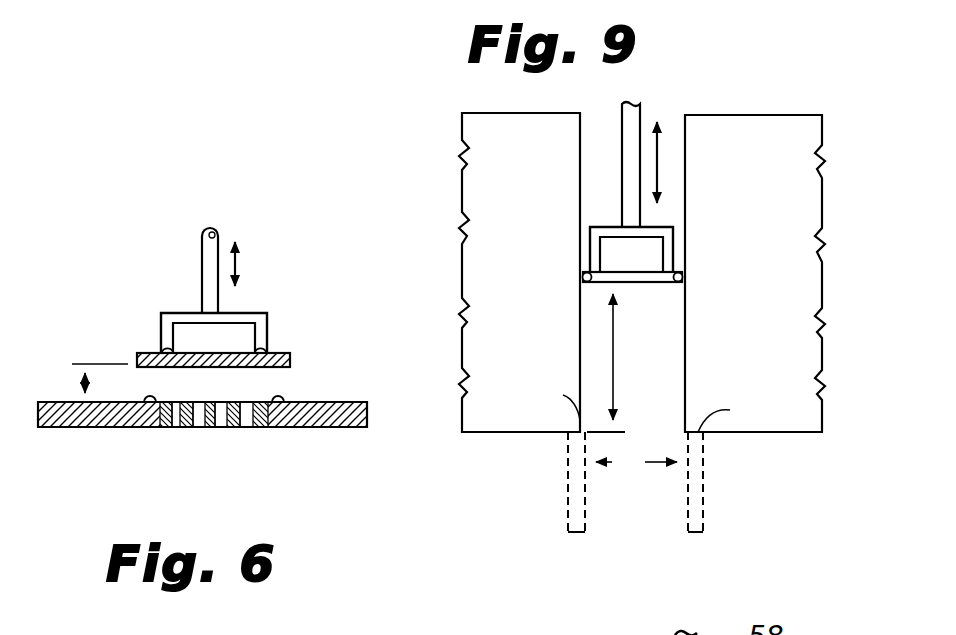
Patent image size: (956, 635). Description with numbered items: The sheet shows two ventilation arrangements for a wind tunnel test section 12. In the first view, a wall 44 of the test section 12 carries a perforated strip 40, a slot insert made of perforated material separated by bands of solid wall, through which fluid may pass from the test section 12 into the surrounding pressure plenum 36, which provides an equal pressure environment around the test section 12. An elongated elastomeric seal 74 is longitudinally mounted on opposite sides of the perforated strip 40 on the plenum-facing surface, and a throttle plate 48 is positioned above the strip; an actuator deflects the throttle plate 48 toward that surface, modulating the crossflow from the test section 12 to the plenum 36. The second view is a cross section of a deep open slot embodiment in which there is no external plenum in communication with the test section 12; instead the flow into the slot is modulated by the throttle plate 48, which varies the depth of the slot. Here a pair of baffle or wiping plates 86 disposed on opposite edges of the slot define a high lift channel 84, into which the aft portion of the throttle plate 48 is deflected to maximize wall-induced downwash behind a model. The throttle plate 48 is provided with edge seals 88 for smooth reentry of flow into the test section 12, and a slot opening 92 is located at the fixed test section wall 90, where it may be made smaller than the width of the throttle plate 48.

In FIG. 6, the test section 12 is at (233, 481).
In FIG. 9, the test section 12 is at (514, 479).
In FIG. 6, the pressure plenum 36 is at (133, 306).
In FIG. 9, the pressure plenum 36 is at (610, 105).
In FIG. 6, the perforated strip 40 is at (180, 448).
In FIG. 6, the wall 44 is at (50, 428).
In FIG. 6, the throttle plate 48 is at (282, 355).
In FIG. 9, the throttle plate 48 is at (646, 283).
In FIG. 6, the elongated elastomeric seal 74 is at (157, 400).
In FIG. 9, the high lift channel 84 is at (633, 530).
In FIG. 9, the wiping plate 86 is at (568, 493).
In FIG. 9, the edge seal 88 is at (582, 276).
In FIG. 9, the fixed test section wall 90 is at (768, 432).
In FIG. 9, the slot opening 92 is at (646, 403).